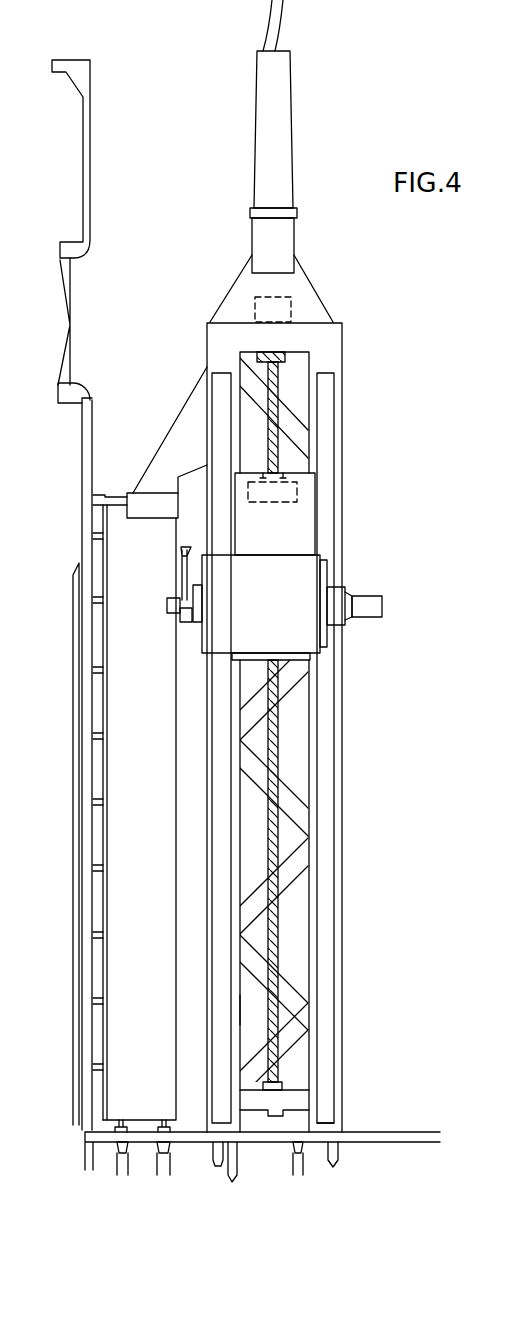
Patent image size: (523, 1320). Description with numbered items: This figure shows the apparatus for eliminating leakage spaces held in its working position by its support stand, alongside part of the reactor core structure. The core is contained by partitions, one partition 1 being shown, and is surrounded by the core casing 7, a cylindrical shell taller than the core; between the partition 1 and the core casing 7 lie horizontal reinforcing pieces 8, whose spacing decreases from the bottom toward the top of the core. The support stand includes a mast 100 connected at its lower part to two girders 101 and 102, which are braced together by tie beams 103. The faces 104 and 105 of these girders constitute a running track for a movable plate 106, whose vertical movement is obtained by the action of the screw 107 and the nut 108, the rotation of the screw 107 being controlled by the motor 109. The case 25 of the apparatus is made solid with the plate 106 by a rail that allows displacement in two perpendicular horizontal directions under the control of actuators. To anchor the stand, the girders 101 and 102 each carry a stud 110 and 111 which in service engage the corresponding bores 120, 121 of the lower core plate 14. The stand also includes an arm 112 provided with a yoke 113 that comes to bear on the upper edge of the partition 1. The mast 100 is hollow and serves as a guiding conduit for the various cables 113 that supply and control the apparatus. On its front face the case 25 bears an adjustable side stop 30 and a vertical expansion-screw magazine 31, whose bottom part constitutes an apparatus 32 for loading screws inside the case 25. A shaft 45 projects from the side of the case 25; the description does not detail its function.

The partition 1 is at (122, 716).
The core casing 7 is at (82, 597).
The horizontal reinforcing pieces 8 is at (93, 804).
The lower core plate 14 is at (385, 1140).
The case 25 is at (300, 585).
The adjustable side stop 30 is at (167, 606).
The vertical expansion-screw magazine 31 is at (182, 549).
The apparatus for loading screws 32 is at (185, 623).
The shaft 45 is at (368, 607).
The mast 100 is at (277, 103).
The girder 101 is at (328, 391).
The girder 102 is at (212, 862).
The tie beams 103 is at (292, 670).
The face of girder 104 is at (302, 922).
The face of girder 105 is at (243, 1010).
The movable plate 106 is at (295, 531).
The screw 107 is at (277, 842).
The nut 108 is at (297, 494).
The motor 109 is at (270, 312).
The stud 110 is at (213, 1147).
The stud 111 is at (343, 1137).
The arm 112 is at (189, 408).
The yoke / cables 113 is at (277, 32).
The bore 120 is at (227, 1172).
The bore 121 is at (328, 1145).